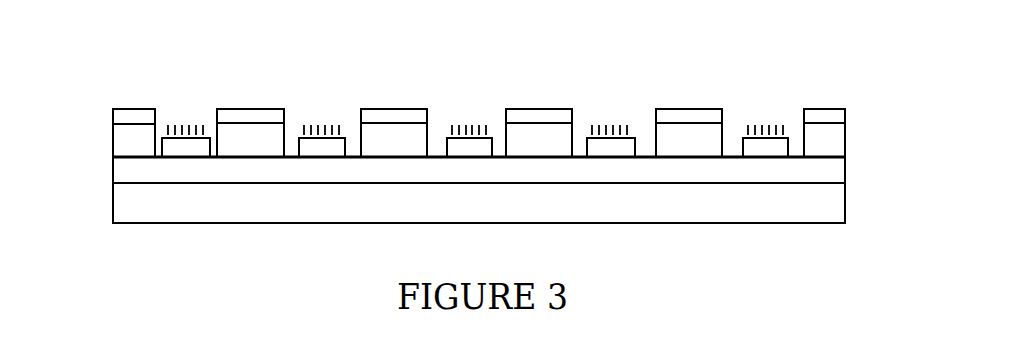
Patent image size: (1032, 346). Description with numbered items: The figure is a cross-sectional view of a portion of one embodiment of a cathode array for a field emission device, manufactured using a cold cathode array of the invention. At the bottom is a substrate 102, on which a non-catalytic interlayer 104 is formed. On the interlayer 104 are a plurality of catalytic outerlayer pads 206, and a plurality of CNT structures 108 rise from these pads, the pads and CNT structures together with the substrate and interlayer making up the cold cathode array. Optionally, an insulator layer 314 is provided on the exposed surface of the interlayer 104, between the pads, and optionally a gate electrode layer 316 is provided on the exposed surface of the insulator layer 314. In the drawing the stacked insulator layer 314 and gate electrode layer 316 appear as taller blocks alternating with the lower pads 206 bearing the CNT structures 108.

The substrate 102 is at (855, 207).
The non-catalytic interlayer 104 is at (97, 171).
The CNT structures 108 is at (329, 114).
The catalytic outerlayer pads 206 is at (575, 135).
The insulator layer 314 is at (855, 143).
The gate electrode layer 316 is at (97, 116).